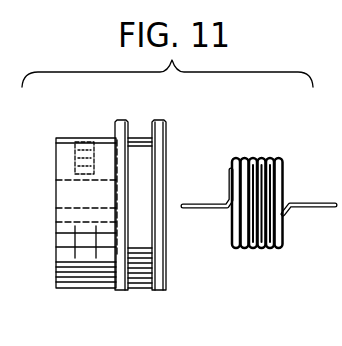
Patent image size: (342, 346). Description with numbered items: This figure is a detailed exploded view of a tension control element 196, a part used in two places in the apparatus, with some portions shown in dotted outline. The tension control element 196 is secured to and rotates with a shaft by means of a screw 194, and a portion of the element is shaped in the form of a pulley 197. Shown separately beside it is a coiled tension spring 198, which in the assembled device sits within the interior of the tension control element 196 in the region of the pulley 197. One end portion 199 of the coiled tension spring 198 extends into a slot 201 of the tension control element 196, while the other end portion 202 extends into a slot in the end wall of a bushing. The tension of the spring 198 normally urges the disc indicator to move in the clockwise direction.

The screw 194 is at (86, 143).
The tension control element 196 is at (56, 155).
The pulley 197 is at (163, 119).
The coiled tension spring 198 is at (258, 158).
The end portion 199 is at (198, 211).
The slot 201 is at (58, 214).
The end portion 202 is at (308, 211).